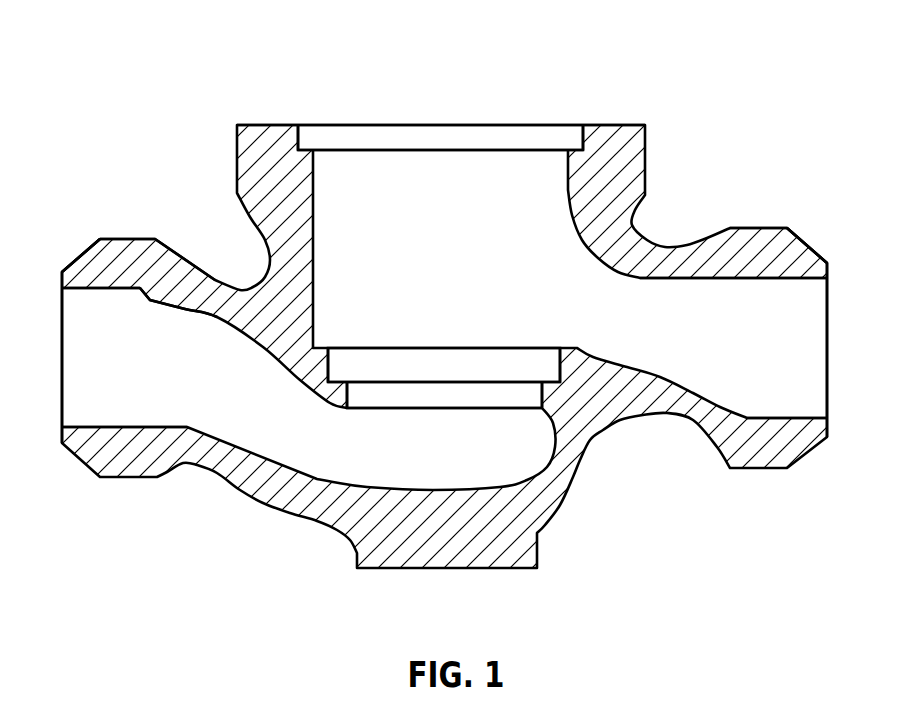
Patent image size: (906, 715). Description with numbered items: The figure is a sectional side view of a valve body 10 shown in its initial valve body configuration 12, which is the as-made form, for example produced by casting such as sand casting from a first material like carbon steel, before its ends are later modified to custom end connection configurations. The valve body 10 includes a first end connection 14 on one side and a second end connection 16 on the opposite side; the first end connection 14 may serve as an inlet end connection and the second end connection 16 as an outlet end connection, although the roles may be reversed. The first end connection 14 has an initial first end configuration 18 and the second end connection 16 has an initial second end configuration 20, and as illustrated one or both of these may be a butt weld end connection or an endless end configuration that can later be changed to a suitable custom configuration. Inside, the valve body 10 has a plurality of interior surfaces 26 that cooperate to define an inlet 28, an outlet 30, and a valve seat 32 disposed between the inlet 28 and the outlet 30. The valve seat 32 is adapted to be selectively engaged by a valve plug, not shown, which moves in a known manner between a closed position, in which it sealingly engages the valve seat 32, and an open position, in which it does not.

The valve body 10 is at (300, 97).
The initial valve body configuration 12 is at (610, 92).
The first end connection 14 is at (88, 218).
The second end connection 16 is at (755, 200).
The initial first end configuration 18 is at (68, 253).
The initial second end configuration 20 is at (827, 233).
The interior surfaces 26 is at (175, 303).
The inlet 28 is at (90, 348).
The outlet 30 is at (788, 352).
The valve seat 32 is at (460, 333).